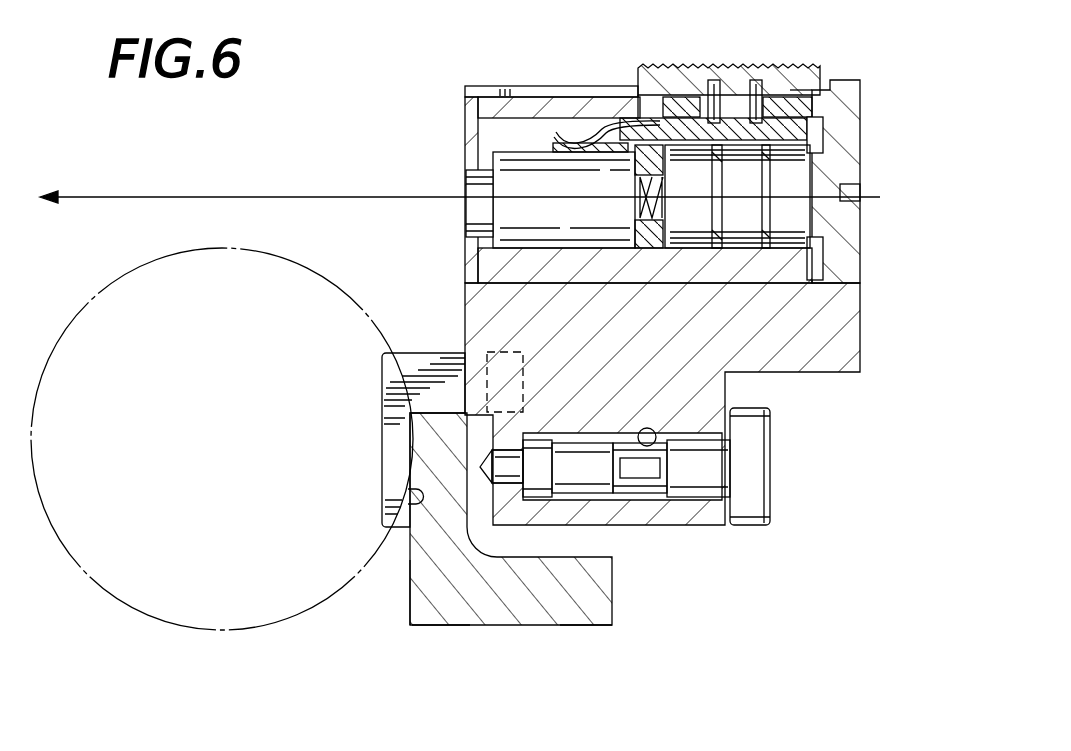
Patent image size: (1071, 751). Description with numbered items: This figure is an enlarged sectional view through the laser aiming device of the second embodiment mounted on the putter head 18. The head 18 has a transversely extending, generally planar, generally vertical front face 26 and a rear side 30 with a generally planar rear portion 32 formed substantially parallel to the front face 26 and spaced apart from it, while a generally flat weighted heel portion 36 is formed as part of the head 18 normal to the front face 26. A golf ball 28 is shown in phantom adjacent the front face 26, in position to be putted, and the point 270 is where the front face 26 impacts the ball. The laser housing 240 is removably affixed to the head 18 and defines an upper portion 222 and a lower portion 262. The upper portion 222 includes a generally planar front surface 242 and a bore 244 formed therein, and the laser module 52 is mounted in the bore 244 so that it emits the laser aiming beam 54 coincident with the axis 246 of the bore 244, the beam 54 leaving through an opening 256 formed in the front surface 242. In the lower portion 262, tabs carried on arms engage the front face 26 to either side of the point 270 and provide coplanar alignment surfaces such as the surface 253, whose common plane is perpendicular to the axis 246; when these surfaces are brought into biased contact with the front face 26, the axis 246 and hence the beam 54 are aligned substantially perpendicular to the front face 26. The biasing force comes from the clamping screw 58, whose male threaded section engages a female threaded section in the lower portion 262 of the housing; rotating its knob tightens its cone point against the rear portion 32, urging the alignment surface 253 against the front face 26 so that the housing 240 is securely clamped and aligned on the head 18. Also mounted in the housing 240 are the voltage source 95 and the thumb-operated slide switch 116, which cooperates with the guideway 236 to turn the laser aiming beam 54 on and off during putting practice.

The head 18 is at (441, 627).
The front face 26 is at (410, 607).
The golf ball 28 is at (80, 308).
The rear side 30 is at (512, 549).
The rear portion 32 is at (481, 405).
The weighted heel portion 36 is at (592, 627).
The laser module 52 is at (580, 187).
The laser aiming beam 54 is at (252, 196).
The clamping screw 58 is at (756, 470).
The voltage source 95 is at (797, 182).
The slide switch 116 is at (833, 55).
The upper portion 222 is at (538, 86).
The guideway 236 is at (617, 90).
The laser housing 240 is at (463, 92).
The front surface 242 is at (470, 140).
The bore 244 is at (547, 228).
The axis 246 is at (630, 248).
The alignment surface 253 is at (412, 490).
The opening 256 is at (478, 190).
The lower portion 262 is at (488, 373).
The point 270 is at (410, 430).